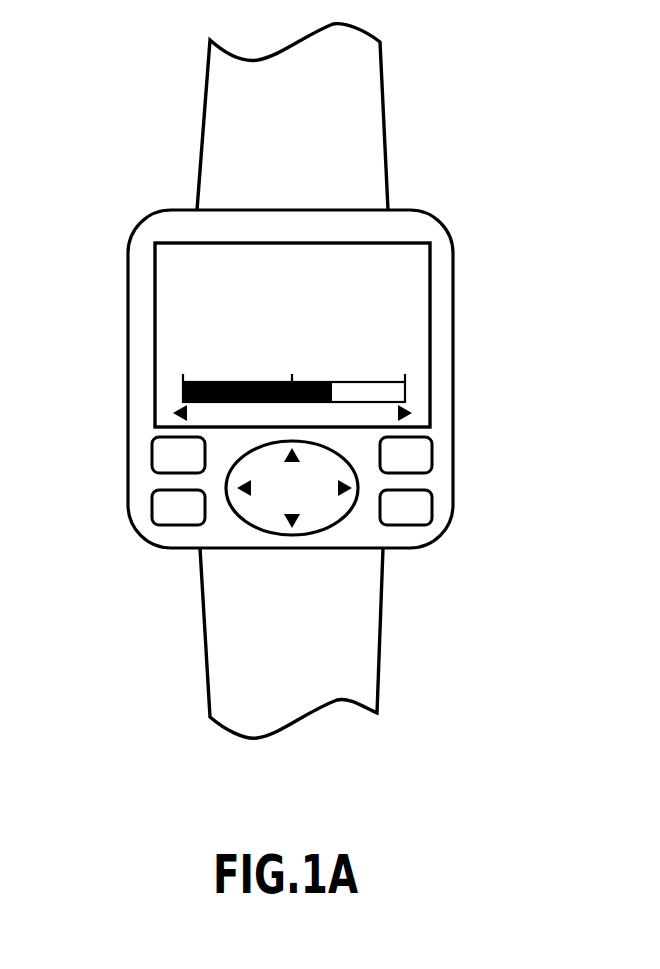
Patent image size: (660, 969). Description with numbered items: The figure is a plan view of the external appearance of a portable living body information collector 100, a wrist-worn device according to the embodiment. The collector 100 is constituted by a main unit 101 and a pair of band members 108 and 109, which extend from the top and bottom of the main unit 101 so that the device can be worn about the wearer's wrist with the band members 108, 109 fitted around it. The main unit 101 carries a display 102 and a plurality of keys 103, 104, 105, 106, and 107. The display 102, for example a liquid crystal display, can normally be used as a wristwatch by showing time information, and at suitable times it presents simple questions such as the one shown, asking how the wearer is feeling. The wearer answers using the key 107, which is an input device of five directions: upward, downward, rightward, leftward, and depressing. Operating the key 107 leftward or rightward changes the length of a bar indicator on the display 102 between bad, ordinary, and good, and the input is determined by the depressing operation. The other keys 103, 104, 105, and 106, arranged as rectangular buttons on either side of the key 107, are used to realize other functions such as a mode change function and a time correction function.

The portable living body information collector 100 is at (493, 114).
The main unit 101 is at (173, 222).
The display 102 is at (167, 307).
The key 103 is at (163, 452).
The key 104 is at (163, 512).
The key 105 is at (420, 448).
The key 106 is at (420, 505).
The key 107 is at (330, 510).
The band member 108 is at (368, 150).
The band member 109 is at (350, 653).